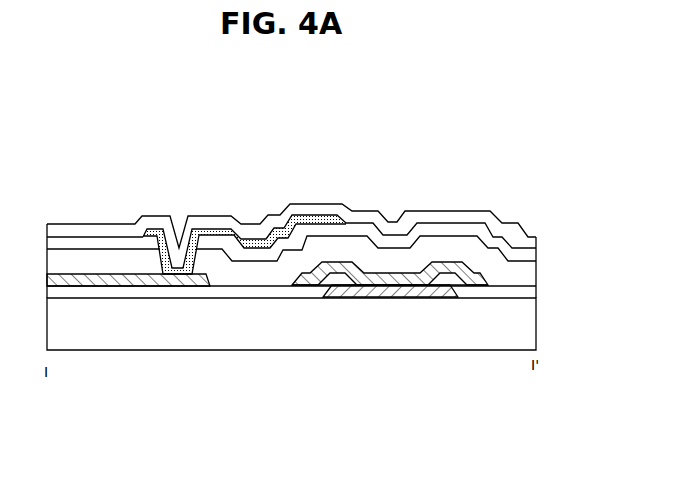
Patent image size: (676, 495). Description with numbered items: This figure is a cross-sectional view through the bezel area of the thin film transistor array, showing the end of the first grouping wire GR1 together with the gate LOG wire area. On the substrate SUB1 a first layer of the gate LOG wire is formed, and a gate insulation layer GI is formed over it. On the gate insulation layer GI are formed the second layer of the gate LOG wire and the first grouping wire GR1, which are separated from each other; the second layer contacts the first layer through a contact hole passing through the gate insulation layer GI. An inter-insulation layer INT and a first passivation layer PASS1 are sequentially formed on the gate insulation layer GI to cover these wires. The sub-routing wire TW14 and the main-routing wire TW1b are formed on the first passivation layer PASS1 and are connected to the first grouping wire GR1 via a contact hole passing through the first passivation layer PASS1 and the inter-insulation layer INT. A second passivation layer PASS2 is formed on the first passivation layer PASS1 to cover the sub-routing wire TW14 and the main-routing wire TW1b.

The substrate SUB1 is at (100, 333).
The first grouping wire GR1 is at (163, 282).
The gate insulation layer GI is at (233, 290).
The inter-insulation layer INT is at (270, 275).
The 1-4 sub-routing wire TW14 is at (152, 229).
The main-routing wire TW1b is at (213, 229).
The first passivation layer PASS1 is at (360, 227).
The second passivation layer PASS2 is at (443, 214).